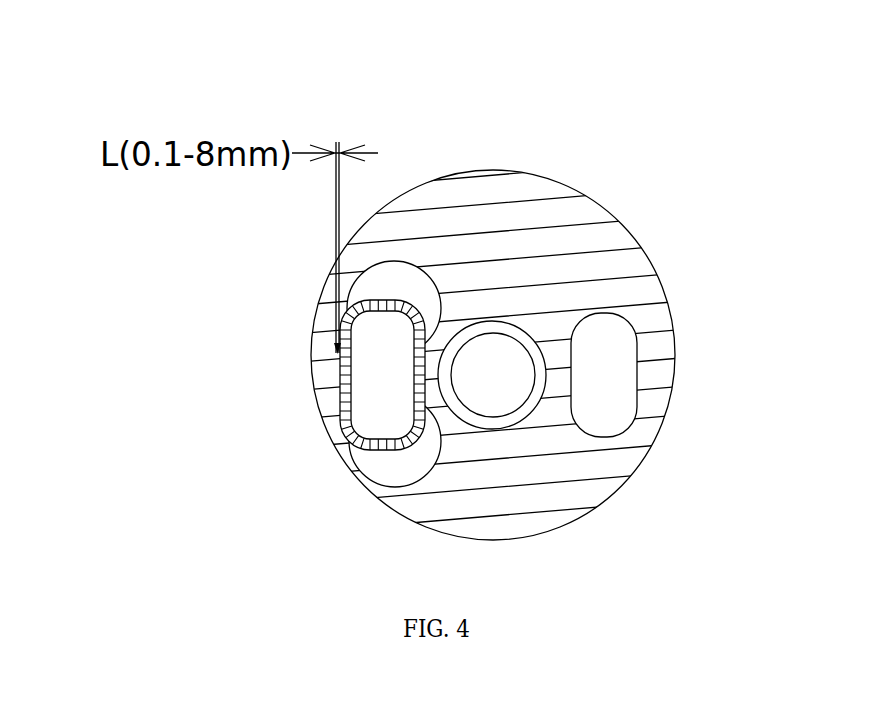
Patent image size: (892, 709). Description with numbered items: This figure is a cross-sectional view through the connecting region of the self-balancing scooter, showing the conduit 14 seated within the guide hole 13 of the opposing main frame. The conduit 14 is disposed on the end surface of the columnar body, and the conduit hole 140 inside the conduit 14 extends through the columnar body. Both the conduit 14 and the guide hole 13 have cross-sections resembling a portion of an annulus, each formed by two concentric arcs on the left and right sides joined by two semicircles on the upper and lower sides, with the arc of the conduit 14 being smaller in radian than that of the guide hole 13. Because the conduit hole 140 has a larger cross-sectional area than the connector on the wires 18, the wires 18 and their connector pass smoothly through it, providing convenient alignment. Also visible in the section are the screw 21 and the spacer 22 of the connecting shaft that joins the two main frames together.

The guide hole 13 is at (400, 282).
The conduit 14 is at (376, 449).
The wires 18 is at (377, 378).
The screw 21 is at (486, 370).
The spacer 22 is at (531, 347).
The conduit hole 140 is at (375, 417).